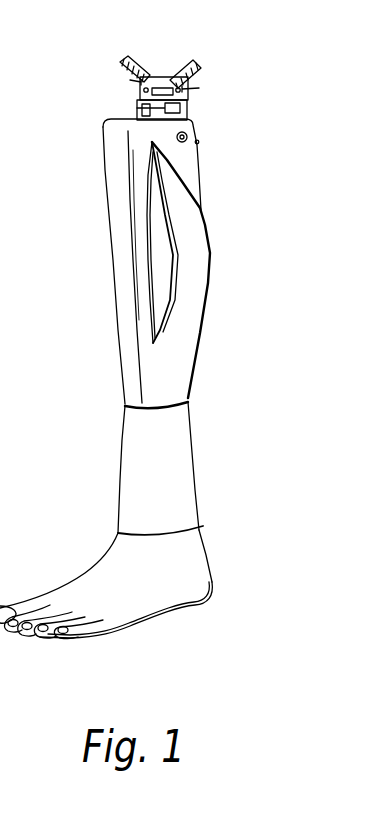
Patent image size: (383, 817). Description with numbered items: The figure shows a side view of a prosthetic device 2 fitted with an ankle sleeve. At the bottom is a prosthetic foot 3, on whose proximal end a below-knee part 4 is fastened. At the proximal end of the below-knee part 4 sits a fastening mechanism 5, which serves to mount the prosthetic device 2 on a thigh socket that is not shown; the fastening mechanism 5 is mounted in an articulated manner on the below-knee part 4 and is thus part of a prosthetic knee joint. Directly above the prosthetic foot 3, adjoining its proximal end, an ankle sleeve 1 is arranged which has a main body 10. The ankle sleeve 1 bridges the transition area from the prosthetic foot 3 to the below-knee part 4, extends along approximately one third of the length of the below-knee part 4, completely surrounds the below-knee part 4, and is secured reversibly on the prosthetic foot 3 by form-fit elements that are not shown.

The ankle sleeve 1 is at (193, 462).
The prosthetic device 2 is at (238, 312).
The prosthetic foot 3 is at (206, 565).
The below-knee part 4 is at (200, 213).
The fastening mechanism 5 is at (182, 68).
The main body 10 is at (131, 465).